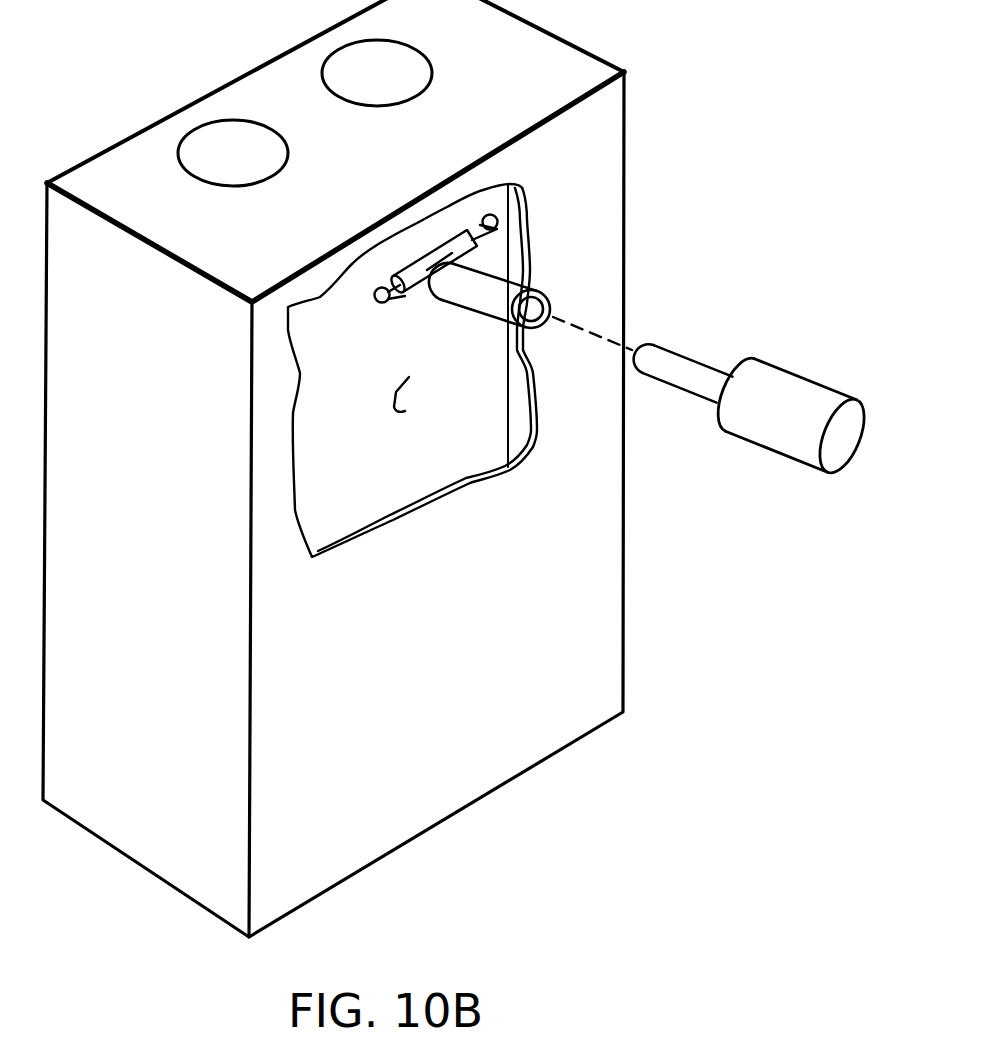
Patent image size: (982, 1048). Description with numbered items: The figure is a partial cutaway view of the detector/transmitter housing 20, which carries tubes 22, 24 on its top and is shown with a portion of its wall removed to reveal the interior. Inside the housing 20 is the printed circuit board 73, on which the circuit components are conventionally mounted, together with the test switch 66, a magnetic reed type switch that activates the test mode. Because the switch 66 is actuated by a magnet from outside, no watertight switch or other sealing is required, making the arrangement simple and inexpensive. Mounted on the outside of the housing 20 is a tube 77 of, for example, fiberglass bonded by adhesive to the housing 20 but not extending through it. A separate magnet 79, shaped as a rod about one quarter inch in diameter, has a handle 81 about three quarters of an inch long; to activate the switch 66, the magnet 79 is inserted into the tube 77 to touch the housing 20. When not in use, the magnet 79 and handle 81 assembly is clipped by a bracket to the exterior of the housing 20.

The housing 20 is at (545, 53).
The tube 22 is at (208, 143).
The tube 24 is at (350, 55).
The test switch 66 is at (482, 253).
The printed circuit board 73 is at (407, 409).
The tube 77 is at (490, 290).
The magnet 79 is at (670, 363).
The handle 81 is at (792, 452).